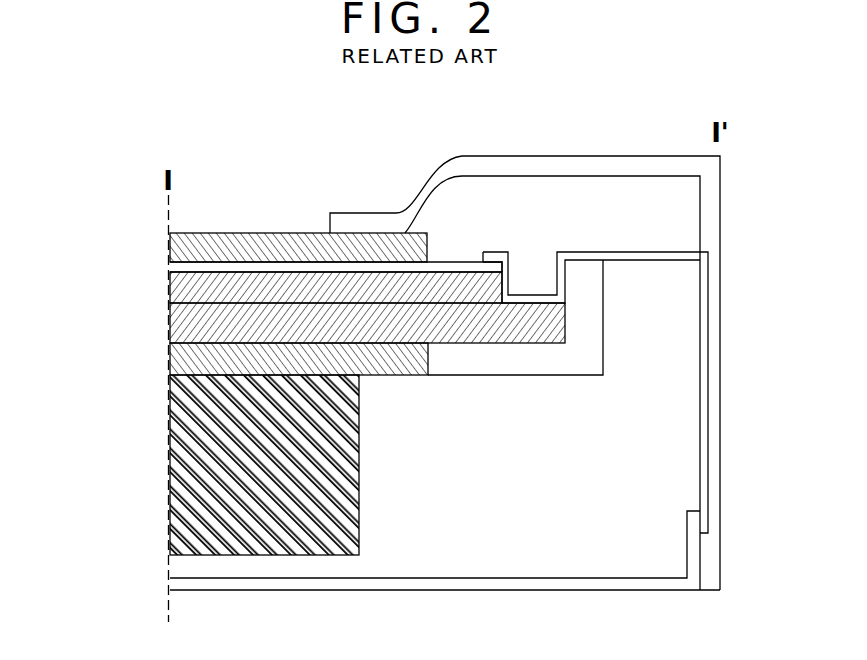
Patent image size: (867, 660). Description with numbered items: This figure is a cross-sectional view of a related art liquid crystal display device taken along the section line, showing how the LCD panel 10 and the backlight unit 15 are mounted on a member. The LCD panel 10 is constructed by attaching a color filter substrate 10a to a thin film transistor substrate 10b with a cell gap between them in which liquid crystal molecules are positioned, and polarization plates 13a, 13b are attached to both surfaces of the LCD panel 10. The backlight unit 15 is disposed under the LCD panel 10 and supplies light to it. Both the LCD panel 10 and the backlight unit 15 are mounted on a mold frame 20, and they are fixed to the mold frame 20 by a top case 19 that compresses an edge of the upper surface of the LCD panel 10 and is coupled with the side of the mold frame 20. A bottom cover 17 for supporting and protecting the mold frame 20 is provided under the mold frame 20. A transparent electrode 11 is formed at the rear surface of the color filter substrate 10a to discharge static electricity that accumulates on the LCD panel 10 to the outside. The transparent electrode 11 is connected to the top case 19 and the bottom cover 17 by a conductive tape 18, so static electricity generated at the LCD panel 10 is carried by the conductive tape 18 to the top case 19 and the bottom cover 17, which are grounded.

The LCD panel 10 is at (304, 308).
The color filter substrate 10a is at (184, 297).
The thin film transistor substrate 10b is at (184, 330).
The transparent electrode 11 is at (184, 268).
The polarization plate 13a is at (184, 364).
The polarization plate 13b is at (182, 242).
The backlight unit 15 is at (192, 466).
The bottom cover 17 is at (695, 559).
The conductive tape 18 is at (705, 301).
The top case 19 is at (703, 214).
The mold frame 20 is at (680, 377).